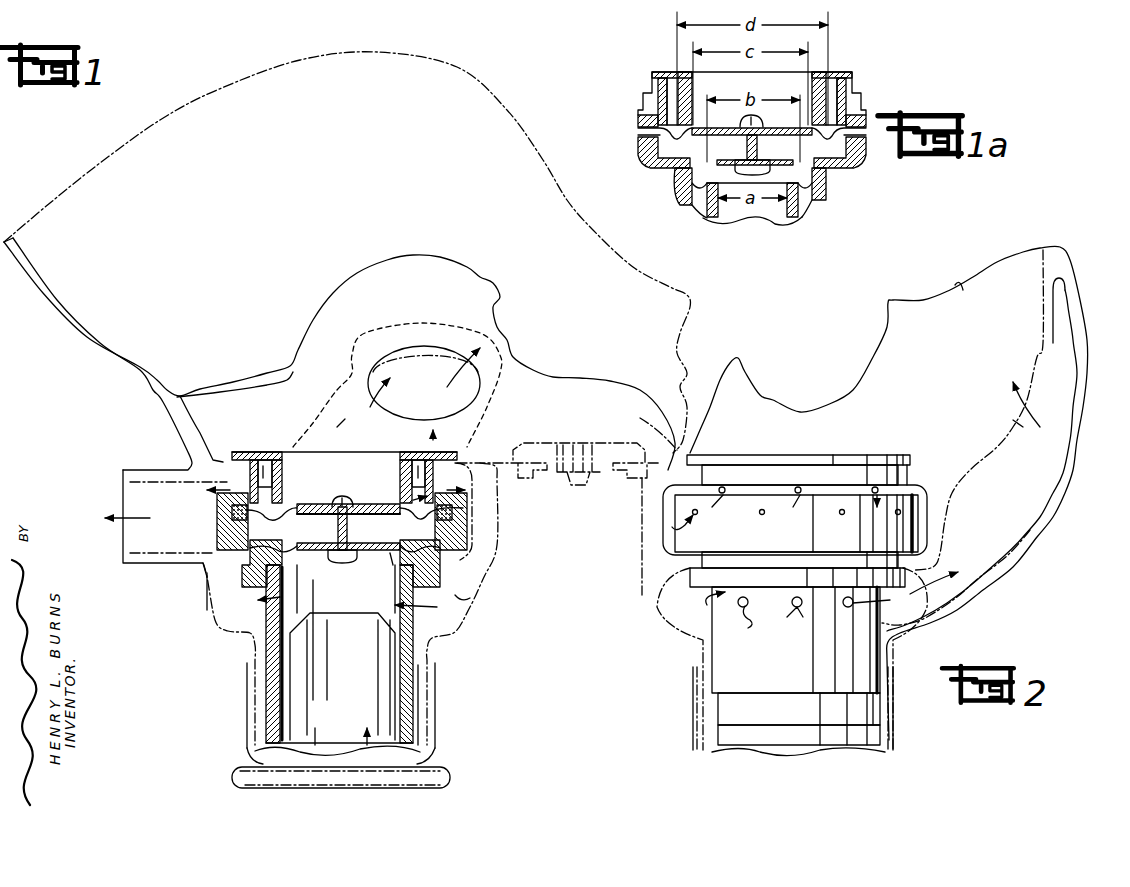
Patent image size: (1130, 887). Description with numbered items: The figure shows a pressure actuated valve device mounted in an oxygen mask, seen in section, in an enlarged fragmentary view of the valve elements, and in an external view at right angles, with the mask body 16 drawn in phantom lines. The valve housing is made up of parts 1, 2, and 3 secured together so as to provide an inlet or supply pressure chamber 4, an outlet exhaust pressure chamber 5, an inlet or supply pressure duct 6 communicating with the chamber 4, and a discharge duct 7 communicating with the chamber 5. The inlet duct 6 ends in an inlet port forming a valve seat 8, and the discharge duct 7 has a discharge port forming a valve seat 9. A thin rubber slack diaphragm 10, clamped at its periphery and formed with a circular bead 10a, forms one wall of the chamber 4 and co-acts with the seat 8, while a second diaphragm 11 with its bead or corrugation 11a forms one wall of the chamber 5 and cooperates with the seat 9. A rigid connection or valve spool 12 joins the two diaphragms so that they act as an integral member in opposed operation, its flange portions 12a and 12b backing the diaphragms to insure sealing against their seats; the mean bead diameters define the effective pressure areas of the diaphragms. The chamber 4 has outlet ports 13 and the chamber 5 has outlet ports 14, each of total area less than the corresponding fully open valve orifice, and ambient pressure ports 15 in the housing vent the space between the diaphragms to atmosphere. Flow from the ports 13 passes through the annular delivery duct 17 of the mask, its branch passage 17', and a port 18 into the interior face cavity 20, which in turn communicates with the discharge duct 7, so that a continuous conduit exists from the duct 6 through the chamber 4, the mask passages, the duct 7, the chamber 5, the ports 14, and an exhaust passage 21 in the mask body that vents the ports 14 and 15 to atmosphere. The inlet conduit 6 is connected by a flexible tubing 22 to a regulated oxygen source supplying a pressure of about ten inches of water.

In FIG. 1, the valve housing part 1 is at (218, 540).
In FIG. 1, the valve housing part 2 is at (250, 548).
In FIG. 1, the valve housing part 3 is at (267, 598).
In FIG. 1, the inlet or supply pressure chamber 4 is at (447, 598).
In FIG. 1, the outlet exhaust pressure chamber 5 is at (412, 517).
In FIG. 1, the inlet or supply pressure duct 6 is at (400, 673).
In FIG. 1, the discharge duct 7 is at (385, 478).
In FIG. 1A, the discharge duct 7 is at (694, 88).
In FIG. 1, the inlet valve seat 8 is at (370, 563).
In FIG. 1A, the inlet valve seat 8 is at (824, 184).
In FIG. 1, the discharge valve seat 9 is at (282, 512).
In FIG. 1A, the discharge valve seat 9 is at (817, 129).
In FIG. 1, the diaphragm 10 is at (367, 554).
In FIG. 1A, the diaphragm 10 is at (682, 180).
In FIG. 1, the circular bead 10a is at (440, 554).
In FIG. 1, the diaphragm 11 is at (397, 505).
In FIG. 1A, the diaphragm 11 is at (836, 146).
In FIG. 1, the bead or corrugation 11a is at (400, 522).
In FIG. 1, the rigid connection 12 is at (348, 535).
In FIG. 1, the flange portion 12a is at (335, 543).
In FIG. 1, the flange portion 12b is at (295, 519).
In FIG. 1, the outlet ports 13 is at (424, 585).
In FIG. 2, the outlet ports 13 is at (743, 608).
In FIG. 1, the outlet ports 14 is at (240, 458).
In FIG. 2, the outlet ports 14 is at (870, 457).
In FIG. 1, the ambient pressure ports 15 is at (232, 512).
In FIG. 2, the ambient pressure ports 15 is at (842, 513).
In FIG. 1, the oxygen mask body 16 is at (548, 141).
In FIG. 2, the oxygen mask body 16 is at (1000, 248).
In FIG. 1, the annular delivery duct or passage 17 is at (357, 605).
In FIG. 2, the annular delivery duct or passage 17 is at (782, 584).
In FIG. 1, the branch passage 17' is at (397, 385).
In FIG. 2, the branch passage 17' is at (978, 437).
In FIG. 1, the port 18 is at (420, 351).
In FIG. 2, the port 18 is at (1043, 362).
In FIG. 2, the interior face cavity 20 is at (960, 287).
In FIG. 1, the exhaust passage 21 is at (123, 536).
In FIG. 1, the flexible tubing 22 is at (450, 778).